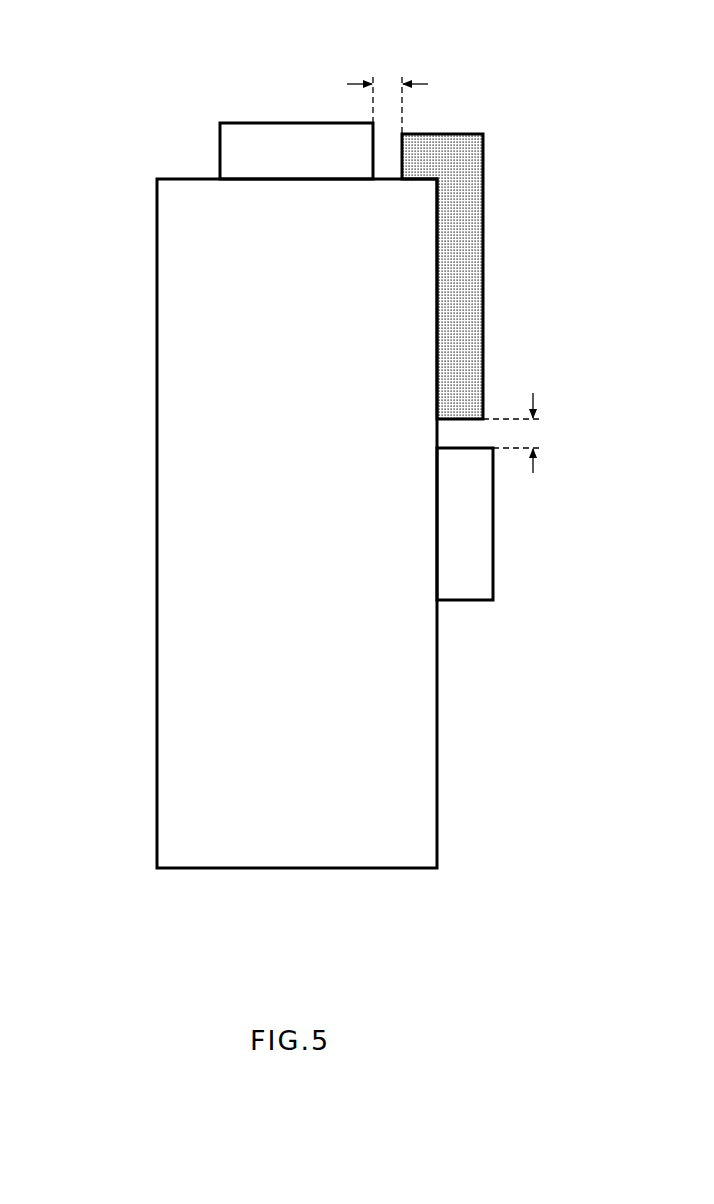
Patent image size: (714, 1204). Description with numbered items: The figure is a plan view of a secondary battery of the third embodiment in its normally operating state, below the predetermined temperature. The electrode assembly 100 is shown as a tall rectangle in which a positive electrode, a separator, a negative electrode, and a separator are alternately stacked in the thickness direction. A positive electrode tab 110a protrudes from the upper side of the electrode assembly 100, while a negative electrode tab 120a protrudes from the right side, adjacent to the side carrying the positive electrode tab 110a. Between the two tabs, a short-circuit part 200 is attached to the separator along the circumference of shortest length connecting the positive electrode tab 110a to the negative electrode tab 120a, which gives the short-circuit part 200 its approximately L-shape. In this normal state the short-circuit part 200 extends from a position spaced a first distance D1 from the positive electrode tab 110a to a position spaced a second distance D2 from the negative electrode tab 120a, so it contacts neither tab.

The electrode assembly 100 is at (118, 425).
The positive electrode tab 110a is at (277, 138).
The negative electrode tab 120a is at (480, 525).
The short-circuit part 200 is at (468, 283).
The first distance D1 is at (386, 82).
The second distance D2 is at (533, 433).